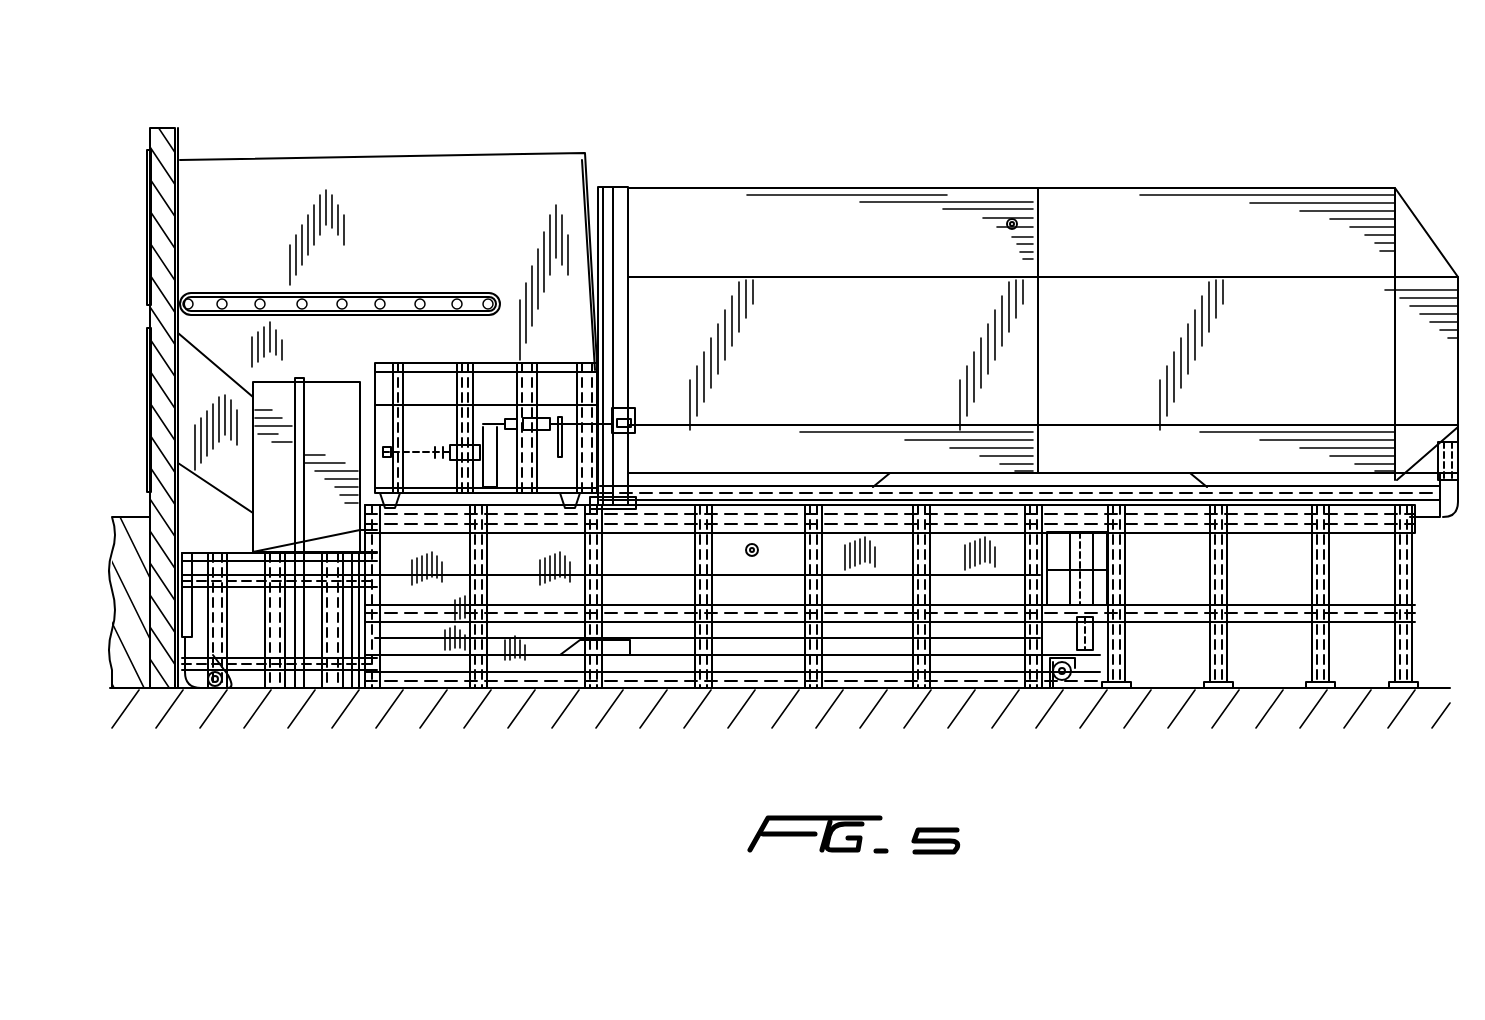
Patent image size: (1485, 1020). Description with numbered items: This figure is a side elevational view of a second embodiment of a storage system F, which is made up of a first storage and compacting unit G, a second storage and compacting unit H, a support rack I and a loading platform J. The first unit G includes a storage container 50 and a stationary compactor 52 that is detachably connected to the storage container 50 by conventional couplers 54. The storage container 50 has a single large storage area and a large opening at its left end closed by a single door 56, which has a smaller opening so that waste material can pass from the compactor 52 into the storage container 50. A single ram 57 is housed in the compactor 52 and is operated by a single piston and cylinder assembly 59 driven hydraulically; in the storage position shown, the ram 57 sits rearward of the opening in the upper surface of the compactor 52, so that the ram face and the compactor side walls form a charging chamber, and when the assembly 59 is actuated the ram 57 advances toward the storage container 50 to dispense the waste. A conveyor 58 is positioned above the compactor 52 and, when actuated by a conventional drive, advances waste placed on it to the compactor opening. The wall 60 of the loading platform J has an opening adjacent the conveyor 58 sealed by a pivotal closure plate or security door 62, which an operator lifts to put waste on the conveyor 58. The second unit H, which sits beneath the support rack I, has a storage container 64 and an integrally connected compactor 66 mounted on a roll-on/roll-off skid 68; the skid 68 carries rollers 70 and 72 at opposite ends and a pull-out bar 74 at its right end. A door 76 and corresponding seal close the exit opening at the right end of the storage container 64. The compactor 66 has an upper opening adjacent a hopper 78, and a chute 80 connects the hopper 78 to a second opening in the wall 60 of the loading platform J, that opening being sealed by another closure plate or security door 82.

The storage container 50 is at (907, 212).
The compactor 52 is at (437, 390).
The couplers 54 is at (580, 413).
The door 56 is at (601, 197).
The ram 57 is at (490, 415).
The conveyor 58 is at (406, 291).
The piston and cylinder assembly 59 is at (430, 447).
The wall 60 is at (178, 141).
The closure plate 62 is at (150, 282).
The storage container 64 is at (833, 595).
The compactor 66 is at (500, 462).
The roll-on/roll-off skid 68 is at (437, 678).
The roller 70 is at (1063, 682).
The roller 72 is at (214, 690).
The pull-out bar 74 is at (1088, 638).
The door 76 is at (1094, 633).
The hopper 78 is at (325, 412).
The chute 80 is at (222, 385).
The closure plate 82 is at (147, 437).
The loading platform J is at (122, 146).
The storage system F is at (657, 171).
The first storage and compacting unit G is at (1037, 189).
The second storage and compacting unit H is at (977, 628).
The support rack I is at (1410, 590).